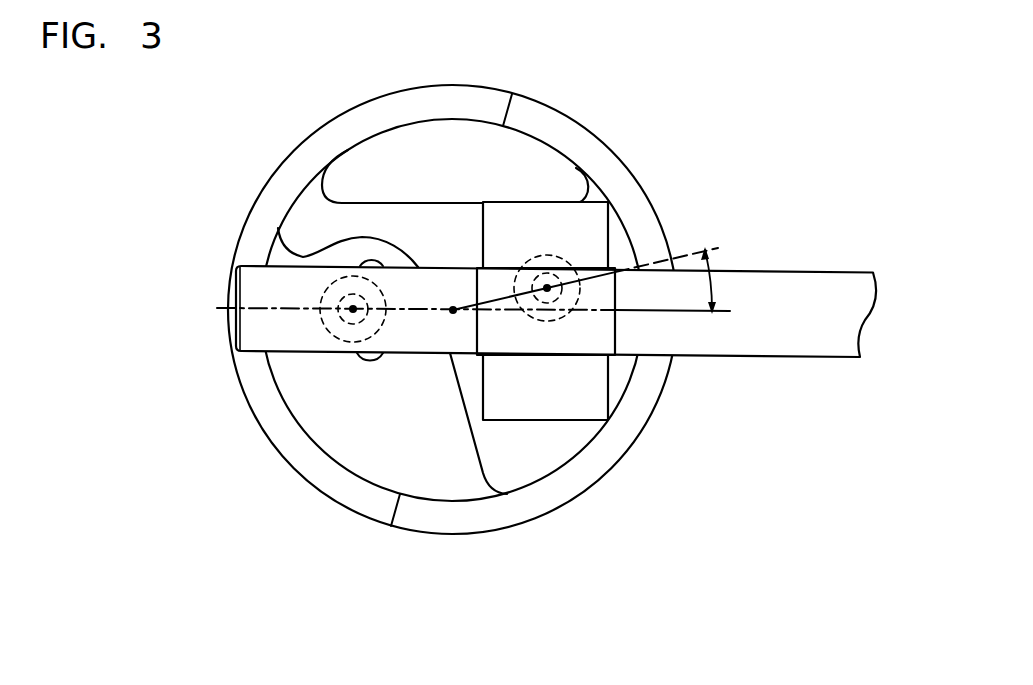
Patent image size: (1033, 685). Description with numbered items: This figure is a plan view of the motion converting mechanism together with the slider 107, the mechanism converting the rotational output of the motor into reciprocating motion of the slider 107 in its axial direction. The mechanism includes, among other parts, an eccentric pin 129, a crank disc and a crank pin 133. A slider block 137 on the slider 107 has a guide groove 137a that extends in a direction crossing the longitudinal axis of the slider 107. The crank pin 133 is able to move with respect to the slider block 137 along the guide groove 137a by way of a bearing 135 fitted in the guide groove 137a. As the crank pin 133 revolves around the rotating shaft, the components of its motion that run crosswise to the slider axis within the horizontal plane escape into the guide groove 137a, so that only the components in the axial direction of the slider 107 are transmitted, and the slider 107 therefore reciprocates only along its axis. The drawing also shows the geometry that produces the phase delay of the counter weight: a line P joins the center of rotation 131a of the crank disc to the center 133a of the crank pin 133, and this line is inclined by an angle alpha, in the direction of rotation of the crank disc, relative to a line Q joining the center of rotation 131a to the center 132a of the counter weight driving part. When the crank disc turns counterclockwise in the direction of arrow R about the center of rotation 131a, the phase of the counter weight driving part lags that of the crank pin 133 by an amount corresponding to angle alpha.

The slider 107 is at (792, 278).
The eccentric pin 129 is at (307, 287).
The center of rotation 131a is at (453, 312).
The center of the counter weight driving part 132a is at (353, 309).
The crank pin 133 is at (547, 288).
The center of the crank pin 133a is at (547, 288).
The bearing 135 is at (547, 300).
The slider block 137 is at (612, 227).
The guide groove 137a is at (589, 420).